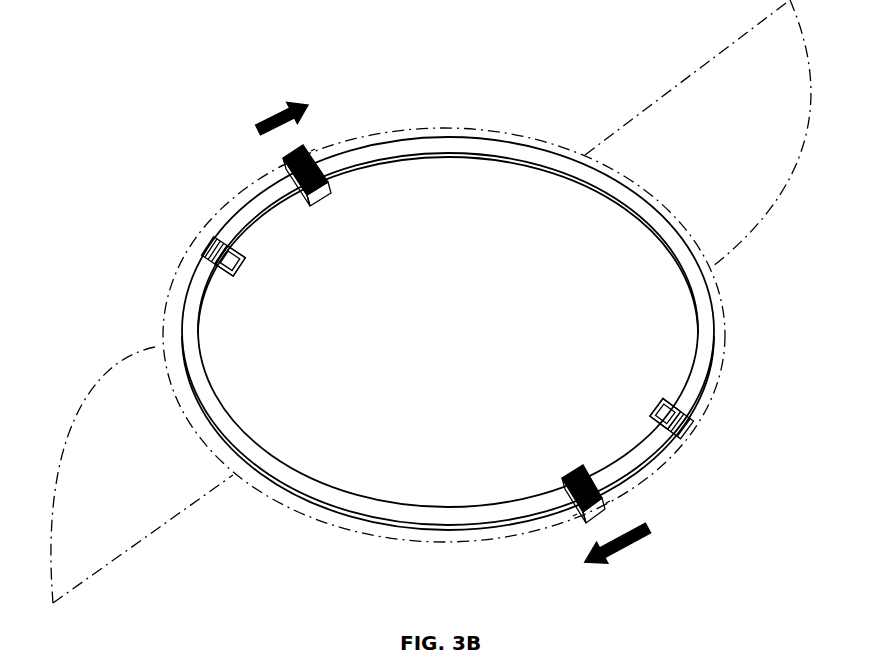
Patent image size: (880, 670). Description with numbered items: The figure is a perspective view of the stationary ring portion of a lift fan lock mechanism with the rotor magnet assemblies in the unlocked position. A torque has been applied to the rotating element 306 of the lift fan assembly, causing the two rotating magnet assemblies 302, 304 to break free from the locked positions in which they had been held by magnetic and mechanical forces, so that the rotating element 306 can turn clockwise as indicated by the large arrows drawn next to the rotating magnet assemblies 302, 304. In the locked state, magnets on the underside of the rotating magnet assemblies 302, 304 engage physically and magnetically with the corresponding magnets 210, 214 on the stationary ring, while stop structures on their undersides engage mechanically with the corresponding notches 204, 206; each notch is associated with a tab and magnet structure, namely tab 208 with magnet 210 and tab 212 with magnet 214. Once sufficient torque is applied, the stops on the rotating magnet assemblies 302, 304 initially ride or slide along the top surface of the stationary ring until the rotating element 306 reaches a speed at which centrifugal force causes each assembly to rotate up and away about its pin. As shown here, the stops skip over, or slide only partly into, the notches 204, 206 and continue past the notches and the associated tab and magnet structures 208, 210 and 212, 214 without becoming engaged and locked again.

The notch 204 is at (258, 253).
The notch 206 is at (667, 390).
The tab 208 is at (238, 263).
The magnet 210 is at (237, 262).
The tab 212 is at (655, 407).
The magnet 214 is at (663, 402).
The rotating magnet assembly 302 is at (320, 197).
The rotating magnet assembly 304 is at (573, 465).
The rotating element 306 is at (727, 334).